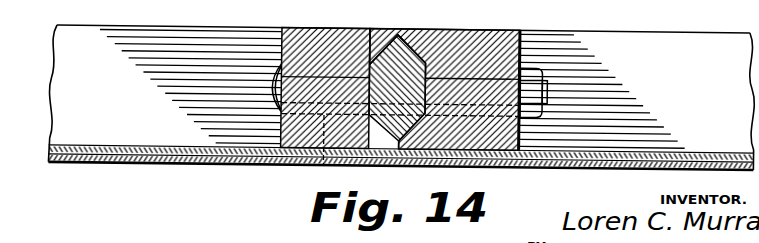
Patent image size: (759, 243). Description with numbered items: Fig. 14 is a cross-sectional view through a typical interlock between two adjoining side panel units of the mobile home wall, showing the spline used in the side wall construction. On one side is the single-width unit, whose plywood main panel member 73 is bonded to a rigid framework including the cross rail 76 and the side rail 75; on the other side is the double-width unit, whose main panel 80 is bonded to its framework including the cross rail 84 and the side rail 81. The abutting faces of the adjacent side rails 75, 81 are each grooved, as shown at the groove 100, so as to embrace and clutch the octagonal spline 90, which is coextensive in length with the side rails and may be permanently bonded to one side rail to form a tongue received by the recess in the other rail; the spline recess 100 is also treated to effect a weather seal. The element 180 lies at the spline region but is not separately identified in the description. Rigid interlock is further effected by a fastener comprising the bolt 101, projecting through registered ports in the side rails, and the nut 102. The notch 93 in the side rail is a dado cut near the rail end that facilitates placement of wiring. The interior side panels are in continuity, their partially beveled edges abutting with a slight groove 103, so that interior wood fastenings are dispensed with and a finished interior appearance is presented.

The cross rail 76 is at (162, 41).
The cross rail 84 is at (654, 48).
The main panel member 73 is at (160, 165).
The main panel 80 is at (603, 166).
The side rail 75 is at (336, 34).
The side rail 81 is at (474, 42).
The octagonal spline 90 is at (419, 40).
The groove 100 is at (372, 37).
The wedge face 180 is at (439, 58).
The slight groove 103 is at (398, 150).
The notch 93 is at (325, 166).
The bolt 101 is at (276, 58).
The nut 102 is at (536, 70).